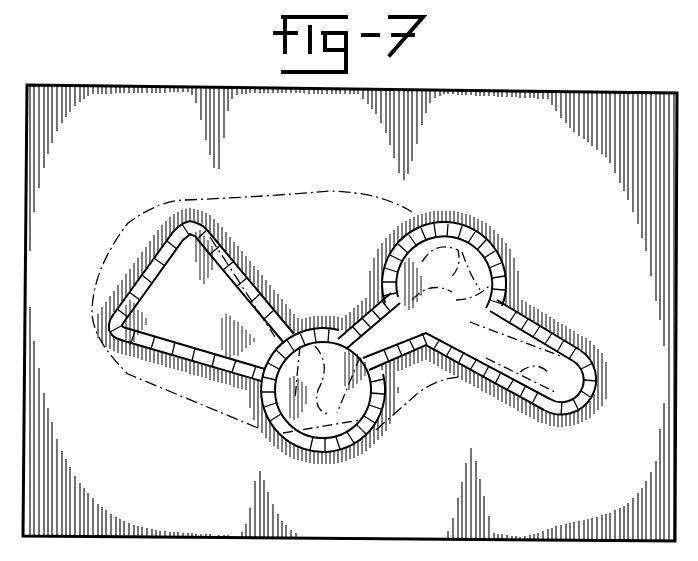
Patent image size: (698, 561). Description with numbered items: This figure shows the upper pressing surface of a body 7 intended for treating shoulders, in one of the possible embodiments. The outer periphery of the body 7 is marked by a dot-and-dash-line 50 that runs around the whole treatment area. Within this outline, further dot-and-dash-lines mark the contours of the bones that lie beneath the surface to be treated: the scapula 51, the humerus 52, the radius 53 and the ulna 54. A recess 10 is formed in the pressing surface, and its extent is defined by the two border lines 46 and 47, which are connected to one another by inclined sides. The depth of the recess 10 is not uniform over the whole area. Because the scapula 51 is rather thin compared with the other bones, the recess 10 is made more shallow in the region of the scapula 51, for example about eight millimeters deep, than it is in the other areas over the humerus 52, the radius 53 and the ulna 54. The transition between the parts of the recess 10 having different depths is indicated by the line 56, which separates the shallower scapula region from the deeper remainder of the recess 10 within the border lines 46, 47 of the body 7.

The body 7 is at (607, 110).
The dot-and-dash-line 50 is at (265, 196).
The scapula 51 is at (266, 264).
The humerus 52 is at (350, 322).
The line 56 is at (310, 333).
The border line 47 is at (478, 243).
The border line 46 is at (500, 256).
The recess 10 is at (502, 262).
The ulna 54 is at (533, 319).
The radius 53 is at (507, 396).